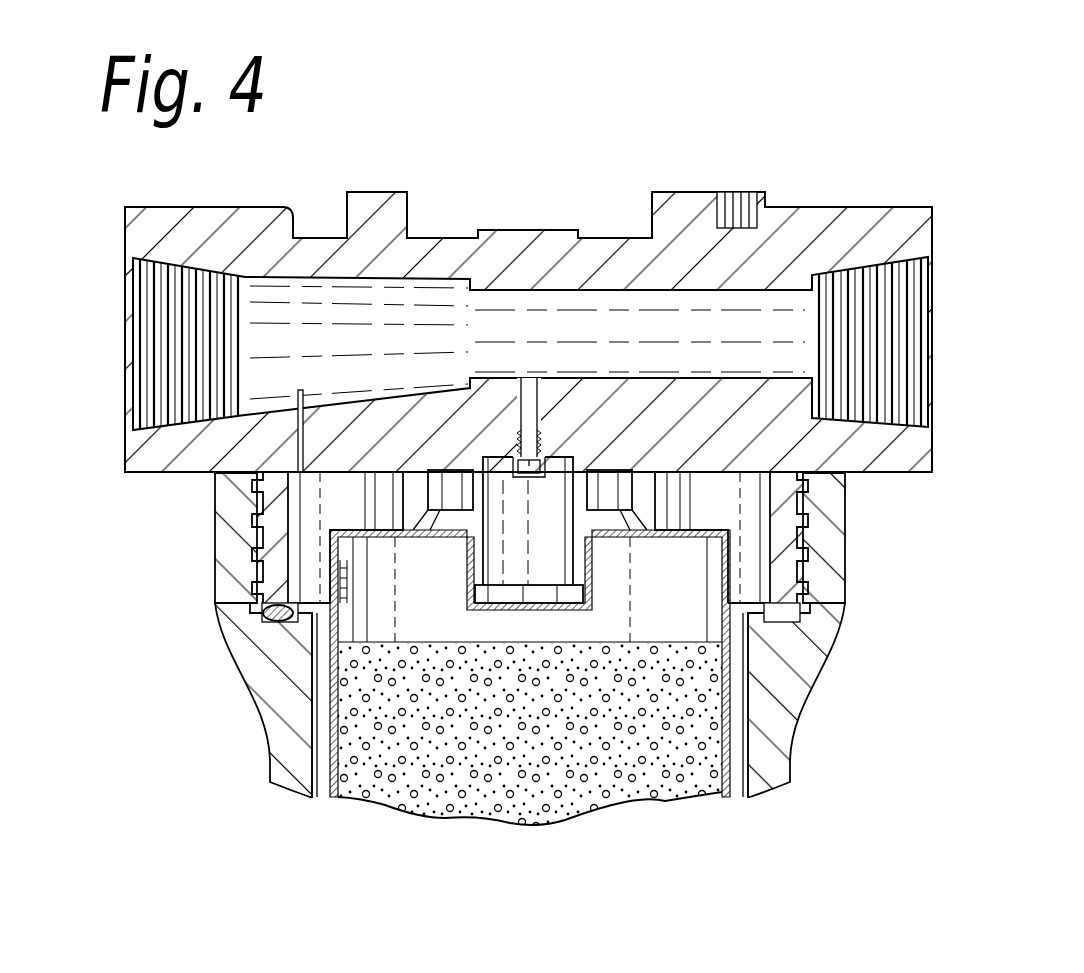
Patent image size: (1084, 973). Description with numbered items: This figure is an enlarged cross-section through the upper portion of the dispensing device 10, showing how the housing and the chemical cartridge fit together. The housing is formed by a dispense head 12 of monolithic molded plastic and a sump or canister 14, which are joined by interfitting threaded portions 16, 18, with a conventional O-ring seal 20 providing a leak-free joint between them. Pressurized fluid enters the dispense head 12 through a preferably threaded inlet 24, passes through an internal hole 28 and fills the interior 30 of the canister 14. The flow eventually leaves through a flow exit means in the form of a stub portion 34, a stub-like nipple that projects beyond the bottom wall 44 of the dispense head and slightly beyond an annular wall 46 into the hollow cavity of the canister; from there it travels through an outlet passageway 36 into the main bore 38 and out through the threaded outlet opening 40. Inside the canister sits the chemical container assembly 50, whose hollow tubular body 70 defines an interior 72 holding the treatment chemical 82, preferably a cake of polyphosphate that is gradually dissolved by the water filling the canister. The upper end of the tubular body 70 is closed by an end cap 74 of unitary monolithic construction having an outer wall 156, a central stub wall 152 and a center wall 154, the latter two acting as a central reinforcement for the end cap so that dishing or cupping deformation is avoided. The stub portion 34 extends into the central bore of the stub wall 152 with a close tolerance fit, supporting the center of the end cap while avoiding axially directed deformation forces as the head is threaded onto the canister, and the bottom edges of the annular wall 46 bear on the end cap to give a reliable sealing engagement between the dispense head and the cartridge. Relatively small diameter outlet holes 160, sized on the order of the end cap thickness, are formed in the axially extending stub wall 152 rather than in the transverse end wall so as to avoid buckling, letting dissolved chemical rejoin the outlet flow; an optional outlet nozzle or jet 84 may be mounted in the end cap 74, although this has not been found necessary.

The dispensing device 10 is at (832, 88).
The dispense head 12 is at (932, 207).
The canister 14 is at (767, 765).
The threaded portion of dispense head 16 is at (777, 527).
The threaded portion of canister 18 is at (810, 560).
The O-ring seal 20 is at (467, 592).
The inlet 24 is at (147, 293).
The internal hole 28 is at (298, 440).
The interior of canister 30 is at (325, 723).
The stub portion 34 is at (577, 500).
The outlet passageway 36 is at (520, 437).
The main bore 38 is at (320, 350).
The threaded outlet opening 40 is at (913, 387).
The bottom wall 44 is at (337, 470).
The annular wall 46 is at (638, 490).
The chemical container assembly 50 is at (380, 803).
The tubular body 70 is at (735, 735).
The interior of body 72 is at (639, 578).
The upper end cap 74 is at (683, 527).
The treatment chemical 82 is at (647, 788).
The outlet nozzle 84 is at (532, 457).
The central stub wall 152 is at (467, 562).
The center wall 154 is at (330, 697).
The outer wall 156 is at (357, 527).
The outlet holes 160 is at (262, 598).